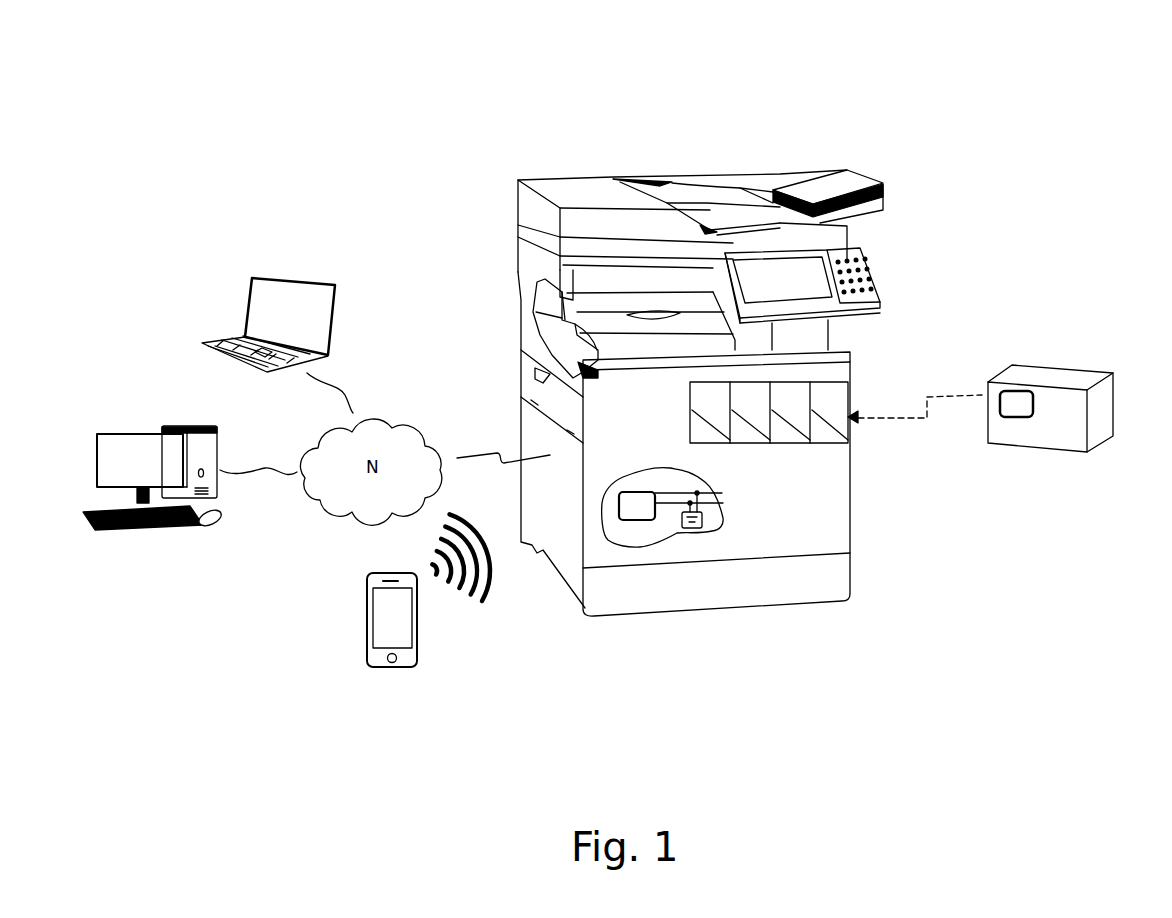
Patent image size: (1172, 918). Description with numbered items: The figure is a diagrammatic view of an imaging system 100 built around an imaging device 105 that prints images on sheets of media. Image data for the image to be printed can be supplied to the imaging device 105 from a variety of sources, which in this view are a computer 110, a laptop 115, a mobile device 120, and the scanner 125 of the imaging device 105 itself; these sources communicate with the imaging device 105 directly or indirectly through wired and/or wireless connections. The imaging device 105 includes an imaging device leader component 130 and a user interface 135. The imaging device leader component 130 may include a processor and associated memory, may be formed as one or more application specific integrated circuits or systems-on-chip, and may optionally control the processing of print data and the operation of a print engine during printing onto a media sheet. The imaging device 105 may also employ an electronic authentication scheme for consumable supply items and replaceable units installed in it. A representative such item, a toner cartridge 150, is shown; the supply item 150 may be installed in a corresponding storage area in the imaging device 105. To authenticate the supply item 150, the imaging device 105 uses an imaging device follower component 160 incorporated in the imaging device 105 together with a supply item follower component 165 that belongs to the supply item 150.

The imaging system 100 is at (984, 57).
The imaging device 105 is at (547, 162).
The computer 110 is at (173, 423).
The laptop 115 is at (280, 277).
The mobile device 120 is at (367, 617).
The scanner 125 is at (517, 199).
The imaging device leader component 130 is at (643, 486).
The user interface 135 is at (861, 262).
The toner cartridge 150 is at (1098, 380).
The imaging device follower component 160 is at (707, 526).
The supply item follower component 165 is at (1028, 392).